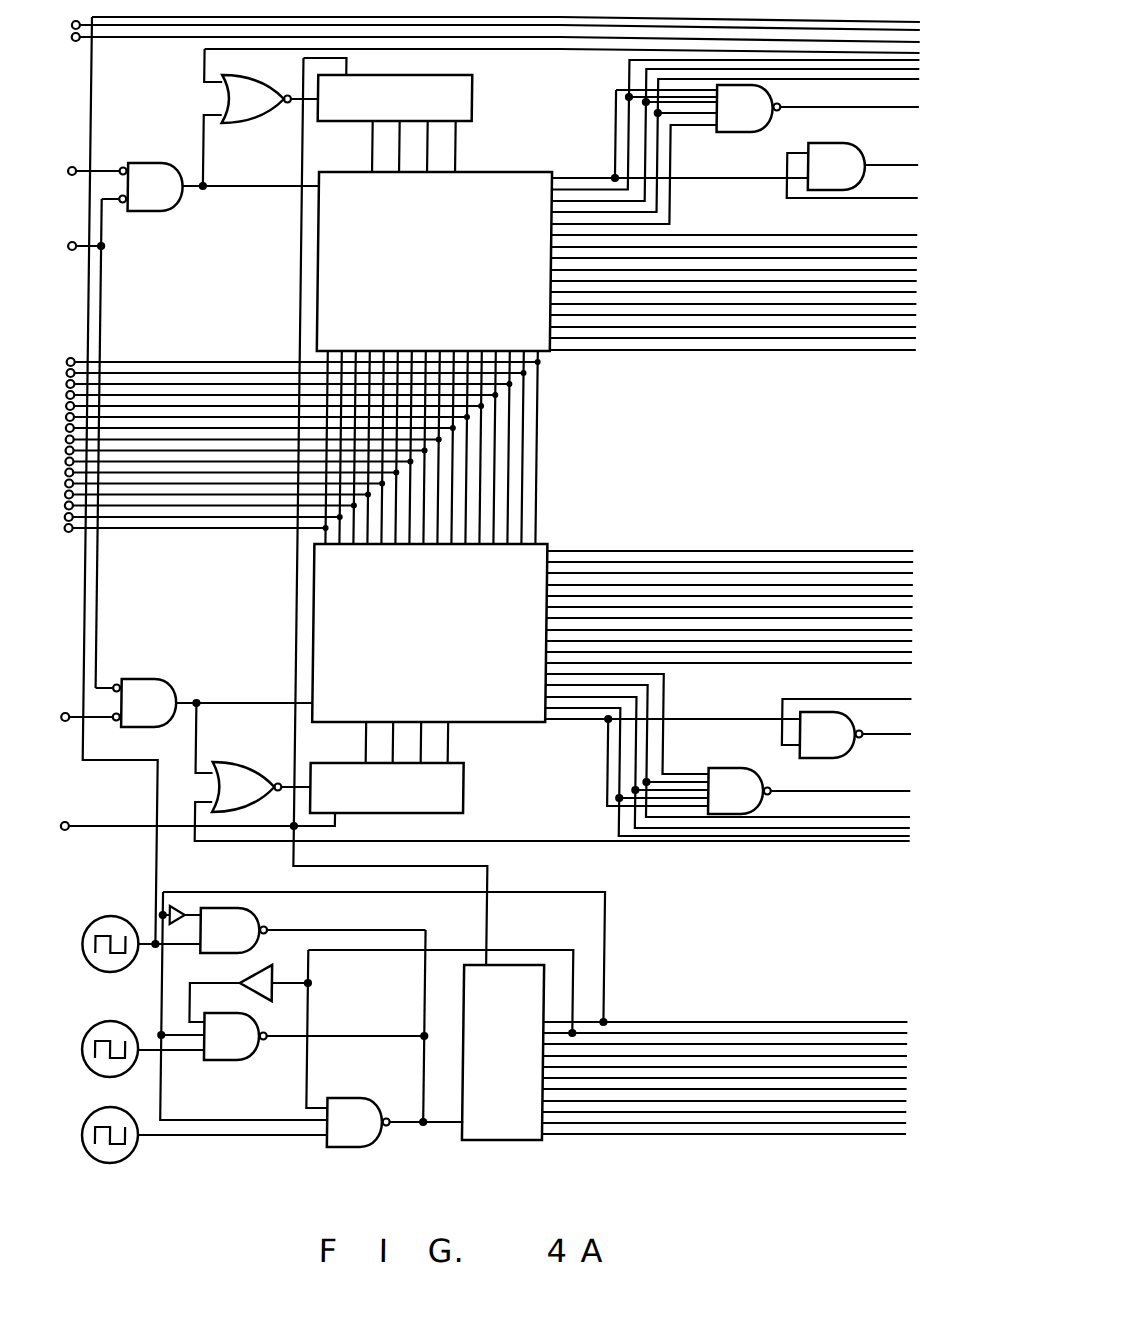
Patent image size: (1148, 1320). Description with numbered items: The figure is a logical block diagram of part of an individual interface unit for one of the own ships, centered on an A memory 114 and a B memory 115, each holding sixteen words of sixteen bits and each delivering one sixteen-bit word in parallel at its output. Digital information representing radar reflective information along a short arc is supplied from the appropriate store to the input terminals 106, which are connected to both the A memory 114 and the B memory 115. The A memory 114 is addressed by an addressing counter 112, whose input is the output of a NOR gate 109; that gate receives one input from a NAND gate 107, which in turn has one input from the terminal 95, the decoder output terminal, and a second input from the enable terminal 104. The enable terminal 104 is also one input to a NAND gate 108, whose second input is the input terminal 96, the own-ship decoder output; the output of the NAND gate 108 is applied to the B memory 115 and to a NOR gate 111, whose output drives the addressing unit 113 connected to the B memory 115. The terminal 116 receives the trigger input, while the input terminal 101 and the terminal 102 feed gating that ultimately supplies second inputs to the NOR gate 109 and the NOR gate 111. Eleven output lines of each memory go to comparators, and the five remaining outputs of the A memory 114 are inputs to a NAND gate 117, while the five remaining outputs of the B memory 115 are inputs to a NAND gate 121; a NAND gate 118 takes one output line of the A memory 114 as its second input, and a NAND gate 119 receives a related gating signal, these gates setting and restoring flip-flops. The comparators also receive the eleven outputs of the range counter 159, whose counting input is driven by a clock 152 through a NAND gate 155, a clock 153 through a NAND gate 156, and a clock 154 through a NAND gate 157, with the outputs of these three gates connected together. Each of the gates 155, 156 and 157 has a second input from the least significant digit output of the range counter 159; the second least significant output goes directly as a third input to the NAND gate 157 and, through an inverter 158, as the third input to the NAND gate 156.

The input terminal 101 is at (76, 21).
The input terminal 102 is at (72, 38).
The terminal 95 is at (71, 168).
The enable terminal 104 is at (70, 246).
The input terminal 96 is at (70, 717).
The input terminals 106 is at (64, 386).
The NAND gate 107 is at (153, 165).
The NAND gate 108 is at (156, 684).
The NOR gate 109 is at (244, 83).
The NOR gate 111 is at (249, 752).
The addressing counter 112 is at (476, 78).
The addressing unit 113 is at (474, 787).
The A memory 114 is at (506, 182).
The B memory 115 is at (521, 726).
The terminal 116 is at (71, 826).
The NAND gate 117 is at (737, 130).
The NAND gate 118 is at (846, 152).
The NAND gate 119 is at (846, 752).
The NAND gate 121 is at (738, 778).
The clock 152 is at (114, 924).
The clock 153 is at (115, 1029).
The clock 154 is at (116, 1116).
The NAND gate 155 is at (261, 922).
The NAND gate 156 is at (265, 1033).
The NAND gate 157 is at (371, 1103).
The inverter 158 is at (264, 970).
The range counter 159 is at (527, 1140).